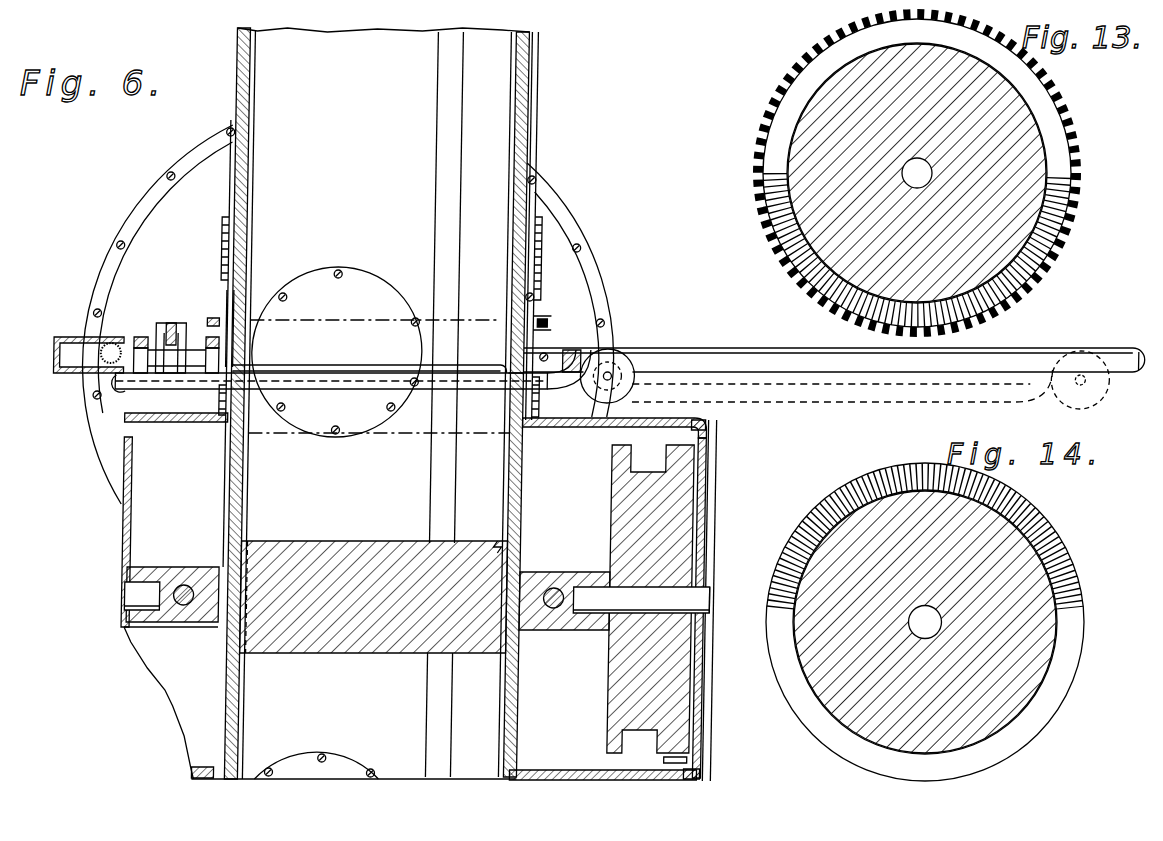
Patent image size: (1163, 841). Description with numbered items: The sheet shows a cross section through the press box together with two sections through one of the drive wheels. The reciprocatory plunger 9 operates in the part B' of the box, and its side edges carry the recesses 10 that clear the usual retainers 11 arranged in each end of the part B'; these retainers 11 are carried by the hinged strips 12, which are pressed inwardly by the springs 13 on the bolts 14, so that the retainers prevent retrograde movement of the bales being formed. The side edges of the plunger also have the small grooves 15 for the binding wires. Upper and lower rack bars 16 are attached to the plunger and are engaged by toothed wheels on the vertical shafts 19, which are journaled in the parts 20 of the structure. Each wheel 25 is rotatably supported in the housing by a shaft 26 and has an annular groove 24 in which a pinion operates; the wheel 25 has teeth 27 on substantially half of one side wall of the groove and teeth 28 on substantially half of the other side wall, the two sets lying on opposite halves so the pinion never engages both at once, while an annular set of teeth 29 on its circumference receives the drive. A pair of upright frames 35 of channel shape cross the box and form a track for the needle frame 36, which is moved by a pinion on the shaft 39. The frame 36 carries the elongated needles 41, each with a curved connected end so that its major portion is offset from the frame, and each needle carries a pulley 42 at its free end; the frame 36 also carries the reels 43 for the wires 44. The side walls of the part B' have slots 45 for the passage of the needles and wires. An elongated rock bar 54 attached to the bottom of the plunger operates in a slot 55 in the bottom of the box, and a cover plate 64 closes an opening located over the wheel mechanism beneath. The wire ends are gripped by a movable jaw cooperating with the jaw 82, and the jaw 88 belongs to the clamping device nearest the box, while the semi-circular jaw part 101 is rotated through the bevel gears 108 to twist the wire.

In FIG. 6, the reciprocatory plunger 9 is at (362, 545).
In FIG. 6, the recesses 10 is at (487, 546).
In FIG. 6, the retainers 11 is at (150, 216).
In FIG. 6, the hinged strips 12 is at (538, 319).
In FIG. 6, the springs 13 is at (541, 320).
In FIG. 6, the bolts 14 is at (546, 323).
In FIG. 6, the small grooves 15 is at (282, 548).
In FIG. 6, the rack bars 16 is at (226, 241).
In FIG. 6, the vertical shafts 19 is at (554, 587).
In FIG. 6, the parts 20 is at (589, 586).
In FIG. 6, the annular groove 24 is at (640, 458).
In FIG. 13, the annular groove 24 is at (1042, 104).
In FIG. 14, the annular groove 24 is at (1053, 694).
In FIG. 6, the wheel 25 is at (617, 524).
In FIG. 13, the wheel 25 is at (1030, 138).
In FIG. 14, the wheel 25 is at (1044, 651).
In FIG. 6, the shaft 26 is at (709, 596).
In FIG. 13, the teeth 27 is at (1060, 236).
In FIG. 14, the teeth 28 is at (1066, 545).
In FIG. 6, the annular set of teeth 29 is at (713, 762).
In FIG. 13, the annular set of teeth 29 is at (770, 96).
In FIG. 6, the upright frames 35 is at (1122, 348).
In FIG. 6, the needle frame 36 is at (574, 349).
In FIG. 6, the shaft 39 is at (513, 353).
In FIG. 6, the needles 41 is at (353, 391).
In FIG. 6, the pulley 42 is at (116, 372).
In FIG. 6, the reels 43 is at (622, 360).
In FIG. 6, the wires 44 is at (377, 365).
In FIG. 6, the slots 45 is at (517, 378).
In FIG. 6, the rock bar 54 is at (432, 472).
In FIG. 6, the slot 55 is at (484, 220).
In FIG. 6, the cover plate 64 is at (310, 278).
In FIG. 6, the jaw 82 is at (138, 375).
In FIG. 6, the jaw 88 is at (240, 361).
In FIG. 6, the semi-circular jaw part 101 is at (189, 377).
In FIG. 6, the bevel gears 108 is at (118, 350).
In FIG. 6, the part of the box B' is at (545, 507).